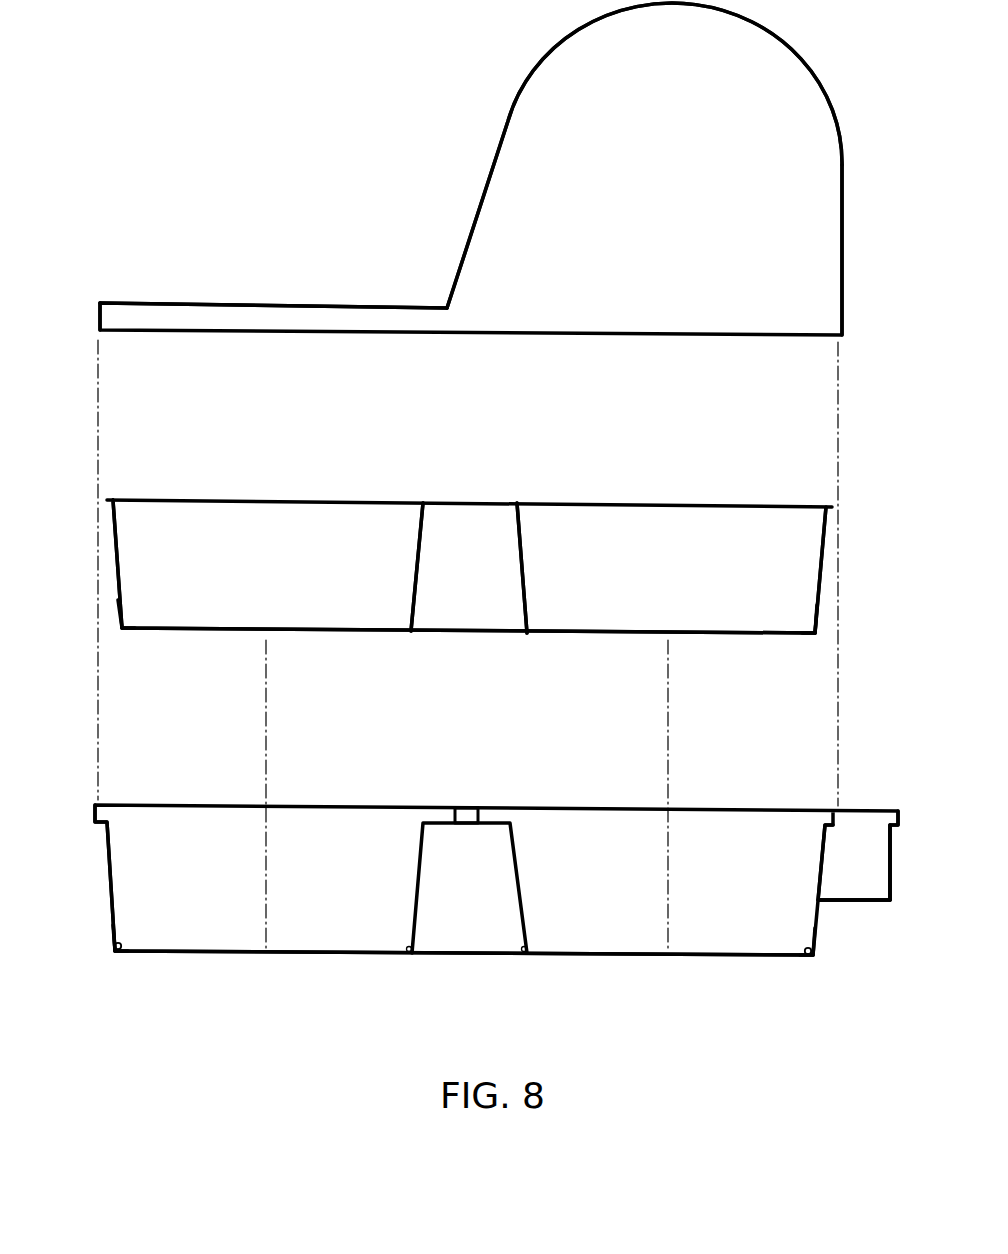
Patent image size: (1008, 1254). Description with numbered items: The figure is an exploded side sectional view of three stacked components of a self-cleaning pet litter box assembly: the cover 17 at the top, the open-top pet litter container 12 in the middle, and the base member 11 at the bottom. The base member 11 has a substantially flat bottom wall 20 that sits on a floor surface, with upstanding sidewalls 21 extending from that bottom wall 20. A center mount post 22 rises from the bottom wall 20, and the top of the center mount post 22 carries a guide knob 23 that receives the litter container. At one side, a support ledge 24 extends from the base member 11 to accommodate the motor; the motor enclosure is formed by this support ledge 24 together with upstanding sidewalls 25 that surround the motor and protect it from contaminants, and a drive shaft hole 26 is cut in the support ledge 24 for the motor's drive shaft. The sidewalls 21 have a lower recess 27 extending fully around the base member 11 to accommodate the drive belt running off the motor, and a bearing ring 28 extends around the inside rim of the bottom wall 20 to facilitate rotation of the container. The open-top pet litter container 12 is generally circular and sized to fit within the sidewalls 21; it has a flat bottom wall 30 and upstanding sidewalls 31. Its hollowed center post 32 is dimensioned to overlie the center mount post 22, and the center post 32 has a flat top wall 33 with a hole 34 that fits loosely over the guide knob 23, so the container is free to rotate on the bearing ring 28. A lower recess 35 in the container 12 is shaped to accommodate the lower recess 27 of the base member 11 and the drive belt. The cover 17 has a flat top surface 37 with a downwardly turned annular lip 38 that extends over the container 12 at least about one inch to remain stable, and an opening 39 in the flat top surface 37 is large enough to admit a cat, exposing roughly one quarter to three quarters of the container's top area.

The base member 11 is at (111, 900).
The open-top pet litter container 12 is at (115, 565).
The cover 17 is at (104, 302).
The bottom wall 20 is at (326, 958).
The sidewalls 21 is at (108, 845).
The center mount post 22 is at (418, 878).
The guide knob 23 is at (465, 826).
The support ledge 24 is at (832, 897).
The upstanding sidewalls 25 is at (890, 872).
The drive shaft hole 26 is at (854, 904).
The lower recess 27 is at (117, 936).
The bearing ring 28 is at (122, 944).
The bottom wall 30 is at (303, 634).
The sidewalls 31 is at (114, 525).
The center post 32 is at (517, 560).
The top wall 33 is at (428, 500).
The hole 34 is at (468, 500).
The lower recess 35 is at (119, 614).
The flat top surface 37 is at (141, 303).
The annular lip 38 is at (100, 318).
The opening 39 is at (304, 305).